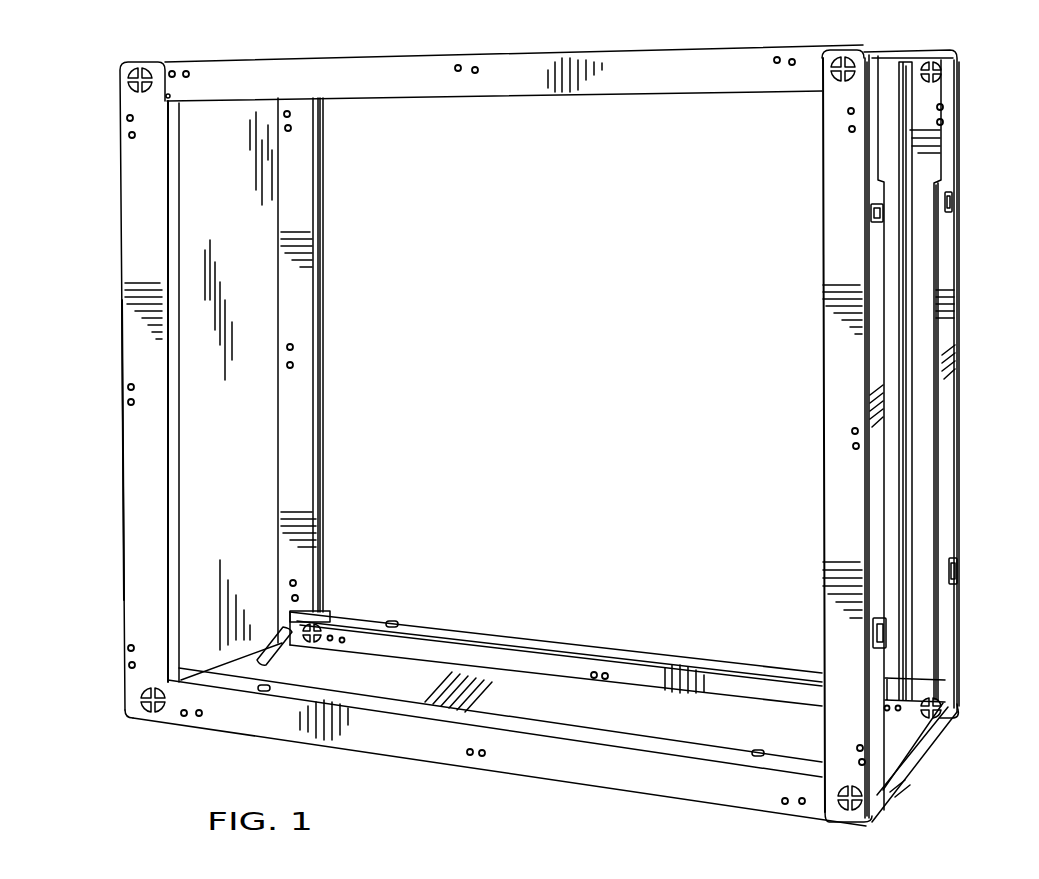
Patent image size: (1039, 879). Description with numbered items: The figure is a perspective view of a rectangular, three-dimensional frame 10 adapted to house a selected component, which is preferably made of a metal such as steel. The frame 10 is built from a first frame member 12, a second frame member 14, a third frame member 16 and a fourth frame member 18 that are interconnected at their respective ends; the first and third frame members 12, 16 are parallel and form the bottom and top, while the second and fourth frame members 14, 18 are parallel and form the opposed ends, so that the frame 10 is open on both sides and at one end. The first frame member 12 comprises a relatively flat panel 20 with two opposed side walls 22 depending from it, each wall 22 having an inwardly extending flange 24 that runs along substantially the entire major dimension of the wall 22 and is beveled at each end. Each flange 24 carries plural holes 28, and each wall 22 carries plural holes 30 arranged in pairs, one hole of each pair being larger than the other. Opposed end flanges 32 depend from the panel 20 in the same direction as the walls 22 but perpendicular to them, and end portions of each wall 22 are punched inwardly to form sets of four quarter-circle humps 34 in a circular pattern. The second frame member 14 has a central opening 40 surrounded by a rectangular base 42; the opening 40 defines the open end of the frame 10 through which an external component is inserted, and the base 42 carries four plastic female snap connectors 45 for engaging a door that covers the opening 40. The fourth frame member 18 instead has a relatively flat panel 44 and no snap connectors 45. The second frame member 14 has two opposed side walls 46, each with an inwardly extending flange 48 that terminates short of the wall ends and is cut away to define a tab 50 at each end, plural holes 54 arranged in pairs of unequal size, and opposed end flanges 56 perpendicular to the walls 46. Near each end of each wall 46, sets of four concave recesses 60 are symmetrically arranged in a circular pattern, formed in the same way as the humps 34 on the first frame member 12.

The frame 10 is at (554, 225).
The first frame member 12 is at (518, 792).
The second frame member 14 is at (980, 343).
The third frame member 16 is at (582, 40).
The fourth frame member 18 is at (108, 289).
The panel 20 is at (535, 692).
The side walls 22 is at (410, 87).
The flange 24 is at (690, 631).
The holes 28 is at (392, 622).
The holes 30 is at (188, 72).
The end flanges 32 is at (935, 51).
The humps 34 is at (940, 92).
The central opening 40 is at (890, 163).
The rectangular base 42 is at (952, 294).
The panel 44 is at (262, 280).
The female snap connectors 45 is at (953, 200).
The side walls 46 is at (300, 212).
The flange 48 is at (166, 210).
The tab 50 is at (955, 720).
The holes 54 is at (129, 135).
The end flanges 56 is at (283, 650).
The recesses 60 is at (128, 88).